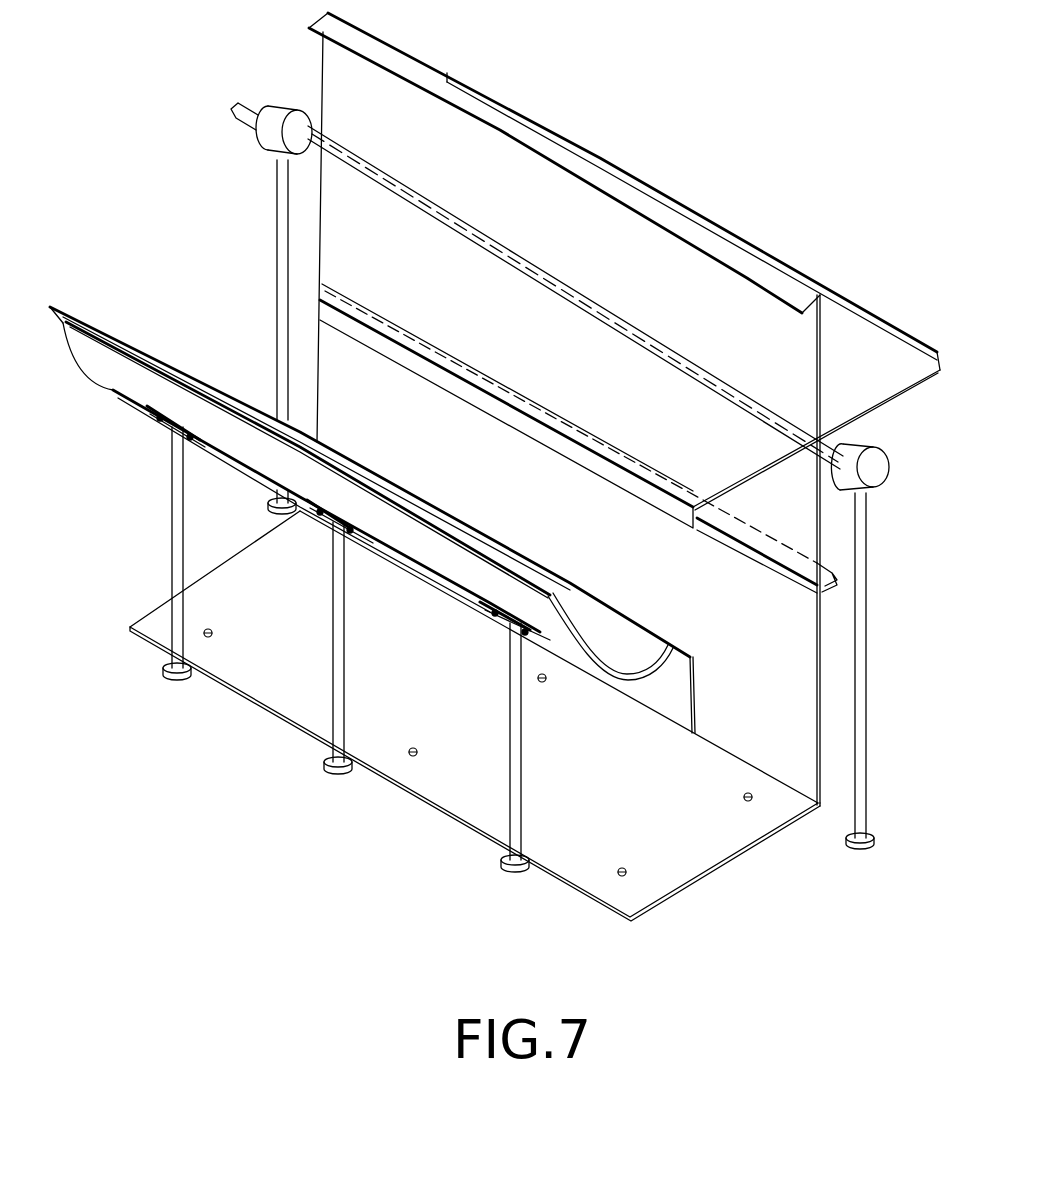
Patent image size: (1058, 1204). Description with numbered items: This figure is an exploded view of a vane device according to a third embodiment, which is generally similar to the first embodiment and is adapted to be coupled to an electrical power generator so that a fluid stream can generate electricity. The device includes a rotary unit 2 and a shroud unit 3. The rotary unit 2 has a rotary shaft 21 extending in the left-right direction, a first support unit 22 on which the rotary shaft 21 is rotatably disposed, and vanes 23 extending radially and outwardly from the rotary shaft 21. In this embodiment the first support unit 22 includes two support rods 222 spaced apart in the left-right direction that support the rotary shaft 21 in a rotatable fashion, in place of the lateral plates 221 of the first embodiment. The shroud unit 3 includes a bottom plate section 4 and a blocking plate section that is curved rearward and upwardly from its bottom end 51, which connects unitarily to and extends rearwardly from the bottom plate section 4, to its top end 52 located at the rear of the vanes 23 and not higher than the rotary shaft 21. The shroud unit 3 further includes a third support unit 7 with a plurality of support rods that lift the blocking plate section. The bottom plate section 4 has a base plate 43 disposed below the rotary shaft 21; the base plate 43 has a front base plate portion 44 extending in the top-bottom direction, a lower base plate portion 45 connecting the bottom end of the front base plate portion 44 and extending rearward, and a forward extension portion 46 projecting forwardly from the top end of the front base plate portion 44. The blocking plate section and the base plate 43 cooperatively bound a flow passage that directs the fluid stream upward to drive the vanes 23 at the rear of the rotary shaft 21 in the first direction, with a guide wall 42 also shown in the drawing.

The rotary unit 2 is at (603, 105).
The rotary shaft 21 is at (843, 427).
The first support unit 22 is at (568, 476).
The lateral plates 221 is at (858, 470).
The support rods 222 is at (278, 330).
The vanes 23 is at (623, 233).
The shroud unit 3 is at (369, 619).
The bottom plate section 4 is at (534, 638).
The guide wall 42 is at (692, 690).
The base plate 43 is at (832, 697).
The front base plate portion 44 is at (782, 598).
The lower base plate portion 45 is at (698, 838).
The forward extension portion 46 is at (837, 573).
The bottom end 51 is at (670, 660).
The top end 52 is at (148, 362).
The third support unit 7 is at (162, 585).